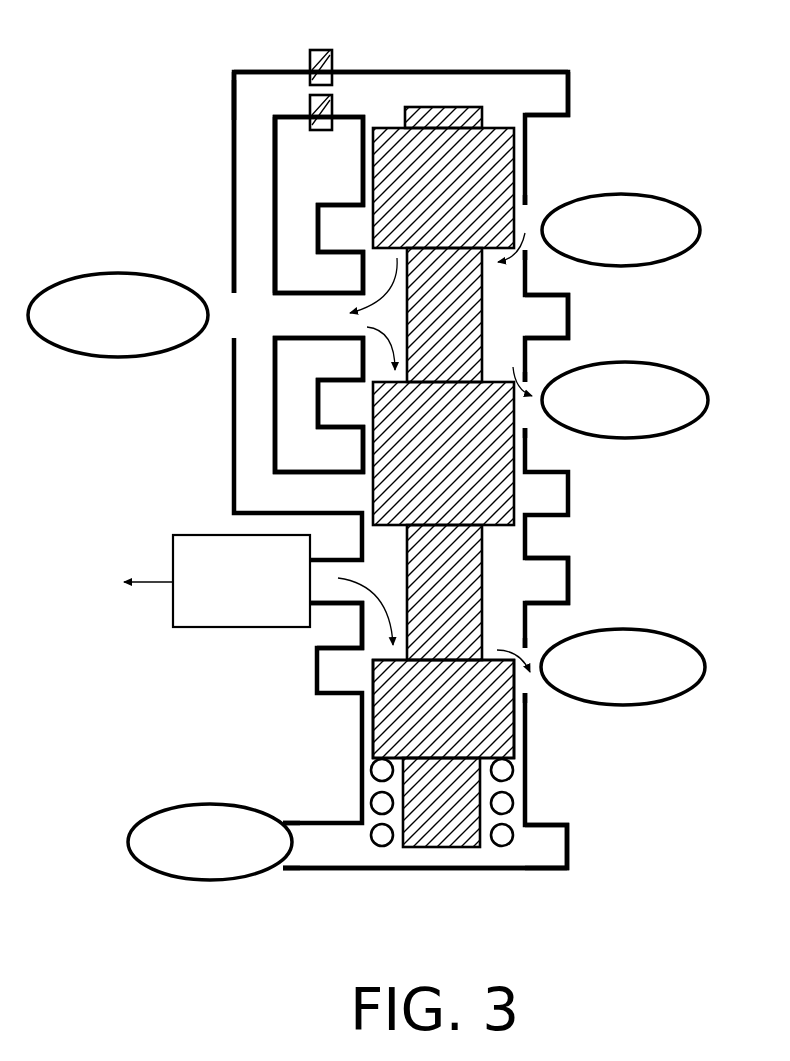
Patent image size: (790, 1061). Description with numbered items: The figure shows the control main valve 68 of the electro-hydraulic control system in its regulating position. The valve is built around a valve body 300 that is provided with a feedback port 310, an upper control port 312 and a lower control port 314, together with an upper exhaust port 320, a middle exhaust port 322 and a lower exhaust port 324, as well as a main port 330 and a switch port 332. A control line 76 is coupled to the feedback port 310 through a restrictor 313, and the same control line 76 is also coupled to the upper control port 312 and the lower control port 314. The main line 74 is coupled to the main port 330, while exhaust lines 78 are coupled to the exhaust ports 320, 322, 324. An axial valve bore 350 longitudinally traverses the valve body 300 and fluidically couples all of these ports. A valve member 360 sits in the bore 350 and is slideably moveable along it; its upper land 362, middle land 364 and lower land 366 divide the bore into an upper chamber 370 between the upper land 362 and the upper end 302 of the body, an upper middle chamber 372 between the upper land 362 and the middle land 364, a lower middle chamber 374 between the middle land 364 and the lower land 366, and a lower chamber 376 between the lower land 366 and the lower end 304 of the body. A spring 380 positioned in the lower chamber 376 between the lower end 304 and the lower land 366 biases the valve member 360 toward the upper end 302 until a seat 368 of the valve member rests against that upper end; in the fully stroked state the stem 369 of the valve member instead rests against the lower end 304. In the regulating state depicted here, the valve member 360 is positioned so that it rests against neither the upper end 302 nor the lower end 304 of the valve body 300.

The control main valve 68 is at (226, 88).
The main line 74 is at (621, 230).
The control line 76 is at (118, 315).
The exhaust lines 78 is at (418, 621).
The valve body 300 is at (525, 780).
The upper end 302 is at (423, 72).
The lower end 304 is at (375, 870).
The feedback port 310 is at (343, 88).
The upper control port 312 is at (333, 315).
The restrictor 313 is at (323, 50).
The lower control port 314 is at (333, 490).
The upper exhaust port 320 is at (532, 413).
The middle exhaust port 322 is at (523, 678).
The lower exhaust port 324 is at (322, 852).
The main port 330 is at (532, 225).
The switch port 332 is at (338, 592).
The axial valve bore 350 is at (438, 864).
The valve member 360 is at (505, 98).
The upper land 362 is at (500, 180).
The middle land 364 is at (495, 475).
The lower land 366 is at (487, 720).
The seat 368 is at (443, 107).
The stem 369 is at (467, 830).
The upper chamber 370 is at (533, 98).
The upper middle chamber 372 is at (493, 337).
The lower middle chamber 374 is at (498, 578).
The lower chamber 376 is at (518, 850).
The spring 380 is at (502, 835).